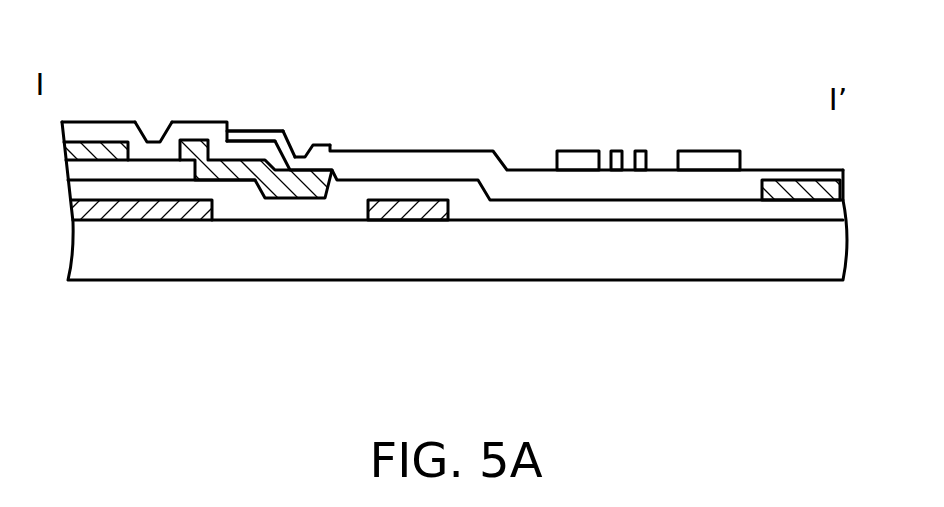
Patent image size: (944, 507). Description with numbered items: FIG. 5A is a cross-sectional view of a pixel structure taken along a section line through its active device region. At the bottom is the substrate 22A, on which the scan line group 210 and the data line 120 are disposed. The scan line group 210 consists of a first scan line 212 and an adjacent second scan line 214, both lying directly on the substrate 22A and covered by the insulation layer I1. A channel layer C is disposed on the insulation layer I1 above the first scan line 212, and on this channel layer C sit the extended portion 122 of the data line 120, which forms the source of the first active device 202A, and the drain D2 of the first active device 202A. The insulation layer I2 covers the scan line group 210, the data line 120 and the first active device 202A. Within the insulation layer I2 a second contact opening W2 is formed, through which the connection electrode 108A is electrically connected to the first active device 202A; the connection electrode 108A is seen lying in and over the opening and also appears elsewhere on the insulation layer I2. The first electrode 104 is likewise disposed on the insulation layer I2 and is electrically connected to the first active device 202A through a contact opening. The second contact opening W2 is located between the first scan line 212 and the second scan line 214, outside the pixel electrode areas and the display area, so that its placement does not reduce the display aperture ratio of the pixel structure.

The substrate 22A is at (665, 242).
The insulation layer I1 is at (590, 212).
The insulation layer I2 is at (383, 173).
The first active device 202A is at (161, 95).
The second contact opening W2 is at (298, 134).
The drain D2 is at (303, 178).
The connection electrode 108A is at (255, 135).
The first electrode 104 is at (646, 148).
The extended portion of the data line 122 is at (84, 145).
The channel layer C is at (118, 178).
The first scan line 212 is at (180, 212).
The second scan line 214 is at (402, 212).
The scan line group 210 is at (375, 350).
The data line 120 is at (797, 190).